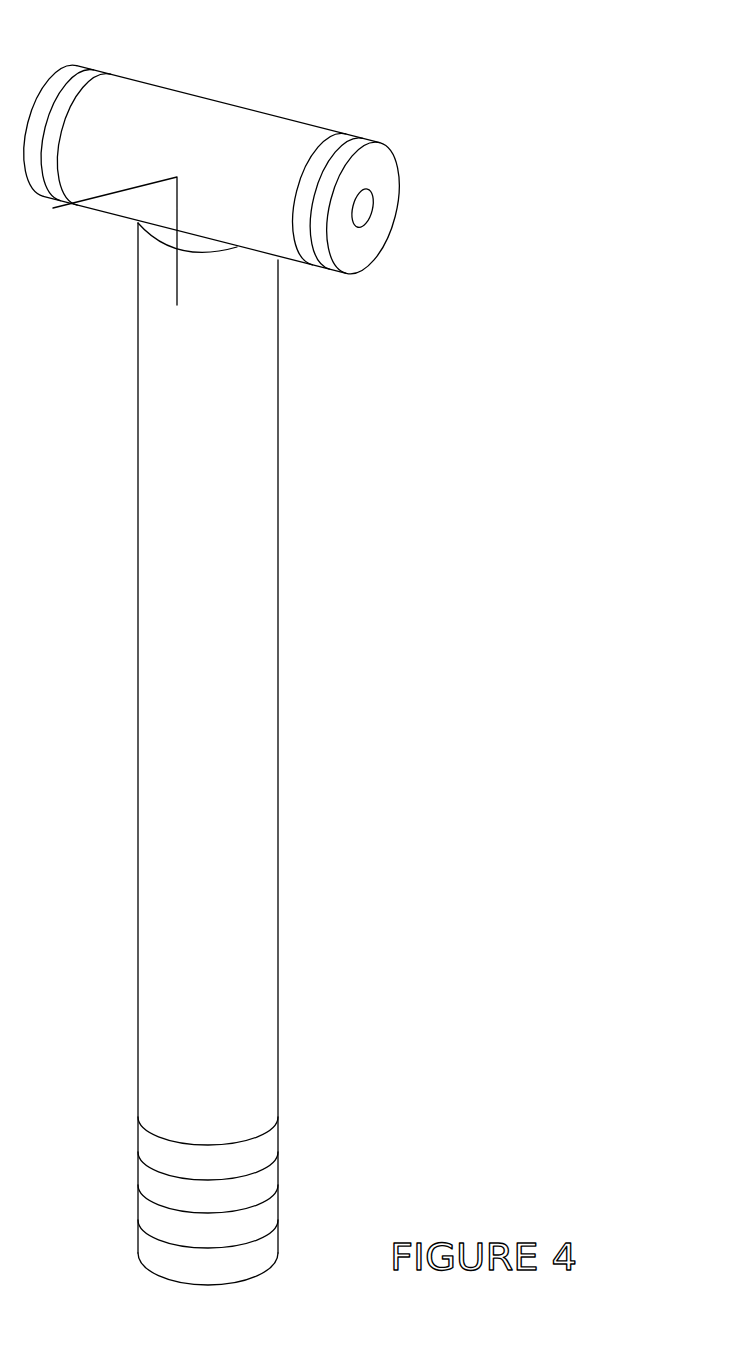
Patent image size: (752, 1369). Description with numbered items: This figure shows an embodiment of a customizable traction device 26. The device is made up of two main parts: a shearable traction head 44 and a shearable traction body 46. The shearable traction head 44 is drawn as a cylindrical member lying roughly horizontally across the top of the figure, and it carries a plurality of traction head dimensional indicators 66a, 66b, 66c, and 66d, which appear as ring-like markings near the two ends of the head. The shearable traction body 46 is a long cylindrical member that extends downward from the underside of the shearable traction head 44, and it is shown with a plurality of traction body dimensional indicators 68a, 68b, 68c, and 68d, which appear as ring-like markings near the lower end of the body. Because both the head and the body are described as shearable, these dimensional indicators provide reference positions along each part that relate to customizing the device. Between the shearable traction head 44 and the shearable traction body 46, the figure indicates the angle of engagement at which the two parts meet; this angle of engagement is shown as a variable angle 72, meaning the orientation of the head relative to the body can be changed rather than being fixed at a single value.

The customizable traction device 26 is at (350, 87).
The shearable traction head 44 is at (385, 173).
The shearable traction body 46 is at (148, 853).
The traction head dimensional indicator 66a is at (78, 64).
The traction head dimensional indicator 66b is at (311, 266).
The traction head dimensional indicator 66c is at (96, 69).
The traction head dimensional indicator 66d is at (297, 266).
The traction body dimensional indicator 68a is at (150, 1235).
The traction body dimensional indicator 68b is at (267, 1205).
The traction body dimensional indicator 68c is at (150, 1165).
The traction body dimensional indicator 68d is at (267, 1135).
The variable angle 72 is at (177, 305).